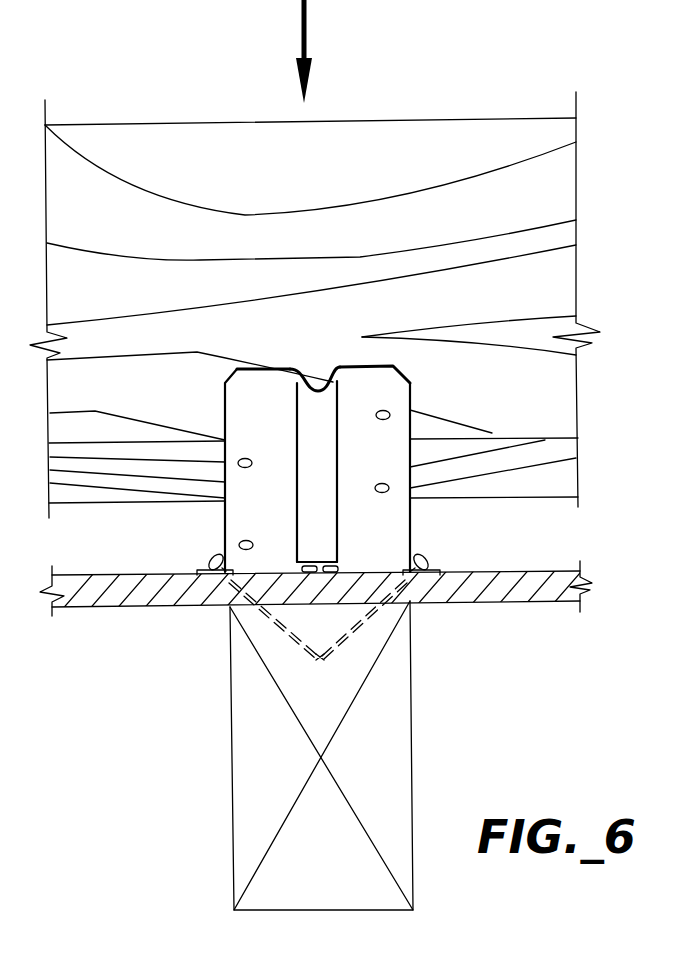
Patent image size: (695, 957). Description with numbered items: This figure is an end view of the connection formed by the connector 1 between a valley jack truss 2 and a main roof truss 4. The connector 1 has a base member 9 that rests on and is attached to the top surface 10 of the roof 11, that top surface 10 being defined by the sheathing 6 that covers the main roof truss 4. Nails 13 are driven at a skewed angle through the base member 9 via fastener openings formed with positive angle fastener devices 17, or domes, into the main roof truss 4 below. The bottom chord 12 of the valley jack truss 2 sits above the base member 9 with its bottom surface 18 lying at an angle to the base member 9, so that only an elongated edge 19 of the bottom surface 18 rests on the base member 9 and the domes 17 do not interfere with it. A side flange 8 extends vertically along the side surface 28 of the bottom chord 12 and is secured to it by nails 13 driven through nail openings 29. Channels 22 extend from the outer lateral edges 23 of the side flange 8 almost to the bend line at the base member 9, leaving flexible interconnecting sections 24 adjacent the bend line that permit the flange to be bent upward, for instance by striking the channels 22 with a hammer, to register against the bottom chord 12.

The connector 1 is at (316, 447).
The valley jack truss 2 is at (345, 288).
The main roof truss 4 is at (416, 762).
The sheathing 6 is at (335, 604).
The side flange 8 is at (416, 385).
The base member 9 is at (452, 562).
The top surface 10 is at (545, 570).
The roof 11 is at (117, 612).
The bottom chord 12 is at (580, 260).
The fasteners 13 is at (262, 638).
The positive angle fastener devices 17 is at (210, 553).
The bottom surface 18 is at (547, 477).
The elongated edge 19 is at (555, 437).
The channels 22 is at (341, 398).
The outer lateral edges 23 is at (254, 368).
The flexible interconnecting sections 24 is at (272, 567).
The side surface 28 is at (539, 190).
The nail openings 29 is at (245, 458).